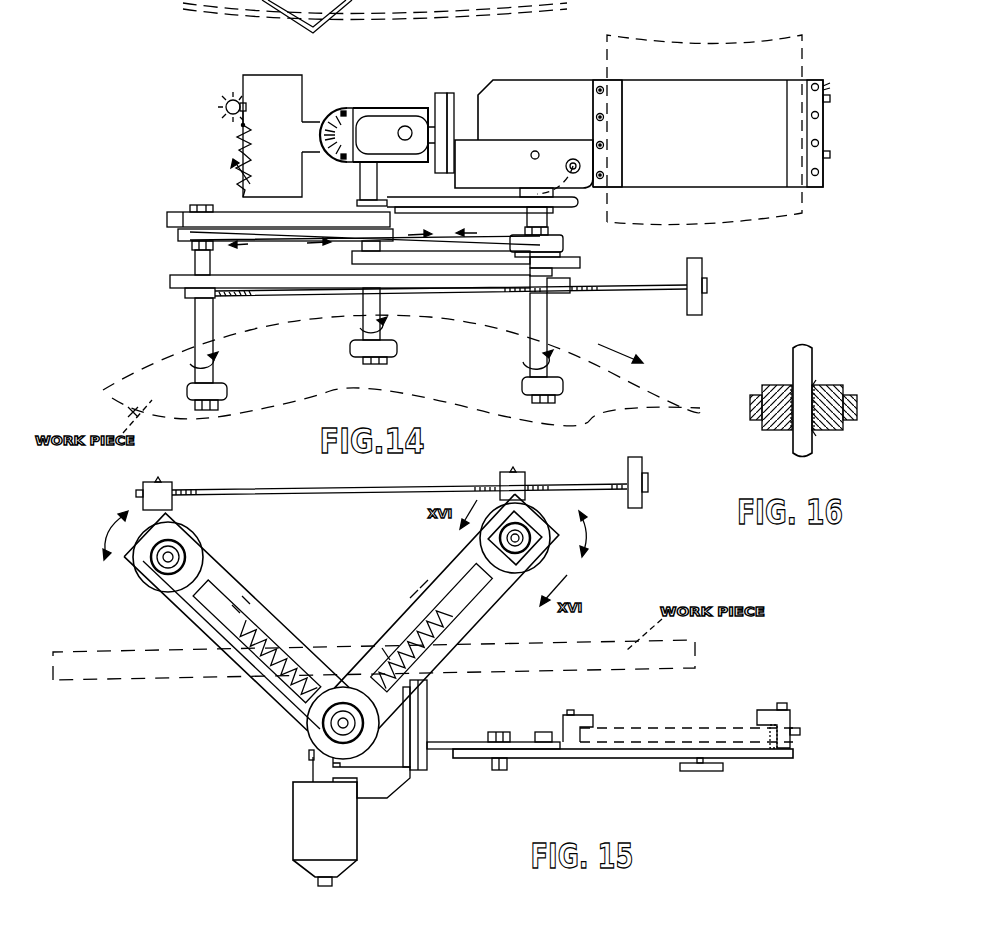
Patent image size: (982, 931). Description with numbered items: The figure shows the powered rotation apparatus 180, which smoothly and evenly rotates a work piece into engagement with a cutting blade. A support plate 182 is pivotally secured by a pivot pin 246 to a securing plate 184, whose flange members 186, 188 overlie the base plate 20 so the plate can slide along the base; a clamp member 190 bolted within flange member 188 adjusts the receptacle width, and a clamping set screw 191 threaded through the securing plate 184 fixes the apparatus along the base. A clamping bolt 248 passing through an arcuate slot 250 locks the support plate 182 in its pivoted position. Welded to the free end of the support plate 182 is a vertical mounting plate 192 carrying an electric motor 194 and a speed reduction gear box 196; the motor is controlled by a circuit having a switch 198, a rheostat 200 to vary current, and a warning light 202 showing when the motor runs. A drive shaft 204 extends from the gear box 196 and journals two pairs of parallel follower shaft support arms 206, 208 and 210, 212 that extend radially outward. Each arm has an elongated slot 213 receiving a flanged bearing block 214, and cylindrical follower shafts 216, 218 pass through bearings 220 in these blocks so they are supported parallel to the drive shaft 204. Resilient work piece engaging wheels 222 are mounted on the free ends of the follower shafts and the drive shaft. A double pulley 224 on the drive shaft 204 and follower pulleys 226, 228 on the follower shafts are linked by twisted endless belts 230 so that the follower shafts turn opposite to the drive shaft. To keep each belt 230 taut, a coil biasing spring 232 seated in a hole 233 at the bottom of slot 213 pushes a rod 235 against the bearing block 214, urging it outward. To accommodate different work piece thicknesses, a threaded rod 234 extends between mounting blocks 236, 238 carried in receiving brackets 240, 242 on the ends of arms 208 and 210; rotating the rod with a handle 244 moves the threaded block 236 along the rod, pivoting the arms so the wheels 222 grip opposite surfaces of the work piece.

In FIG. 14, the base plate 20 is at (738, 50).
In FIG. 15, the base plate 20 is at (680, 733).
In FIG. 14, the rotation apparatus 180 is at (218, 135).
In FIG. 15, the rotation apparatus 180 is at (180, 750).
In FIG. 14, the support plate 182 is at (488, 160).
In FIG. 15, the support plate 182 is at (473, 741).
In FIG. 14, the securing plate 184 is at (490, 108).
In FIG. 15, the securing plate 184 is at (627, 759).
In FIG. 14, the flange member 186 is at (617, 120).
In FIG. 15, the flange member 186 is at (590, 717).
In FIG. 14, the flange member 188 is at (801, 97).
In FIG. 15, the flange member 188 is at (767, 713).
In FIG. 14, the clamp member 190 is at (826, 90).
In FIG. 15, the clamp member 190 is at (772, 748).
In FIG. 15, the clamping set screw 191 is at (713, 771).
In FIG. 14, the mounting plate 192 is at (450, 110).
In FIG. 15, the mounting plate 192 is at (427, 706).
In FIG. 14, the electric motor 194 is at (333, 117).
In FIG. 15, the electric motor 194 is at (312, 830).
In FIG. 14, the speed reduction gear box 196 is at (402, 110).
In FIG. 15, the speed reduction gear box 196 is at (318, 766).
In FIG. 14, the switch 198 is at (248, 137).
In FIG. 14, the variable resistor 200 is at (251, 175).
In FIG. 14, the warning light 202 is at (247, 105).
In FIG. 14, the drive shaft 204 is at (360, 184).
In FIG. 14, the follower shaft support arm 206 is at (410, 198).
In FIG. 14, the follower shaft support arm 208 is at (581, 266).
In FIG. 16, the follower shaft support arm 208 is at (758, 426).
In FIG. 15, the follower shaft support arm 208 is at (393, 647).
In FIG. 14, the follower shaft support arm 210 is at (170, 280).
In FIG. 15, the follower shaft support arm 210 is at (244, 606).
In FIG. 14, the follower shaft support arm 212 is at (170, 215).
In FIG. 15, the elongated slot 213 is at (216, 589).
In FIG. 16, the flanged bearing block 214 is at (834, 383).
In FIG. 15, the flanged bearing block 214 is at (516, 556).
In FIG. 14, the follower shaft 216 is at (546, 322).
In FIG. 16, the follower shaft 216 is at (797, 361).
In FIG. 15, the follower shaft 216 is at (537, 553).
In FIG. 14, the follower shaft 218 is at (194, 327).
In FIG. 16, the bearing 220 is at (814, 435).
In FIG. 14, the work piece engaging wheel 222 is at (224, 390).
In FIG. 15, the work piece engaging wheel 222 is at (175, 550).
In FIG. 14, the double pulley 224 is at (352, 255).
In FIG. 14, the follower pulley 226 is at (559, 236).
In FIG. 14, the follower pulley 228 is at (189, 245).
In FIG. 14, the endless belt 230 is at (247, 234).
In FIG. 15, the endless belt 230 is at (174, 602).
In FIG. 15, the coil biasing spring 232 is at (290, 638).
In FIG. 15, the hole 233 is at (257, 614).
In FIG. 14, the threaded rod 234 is at (458, 292).
In FIG. 15, the threaded rod 234 is at (330, 494).
In FIG. 15, the rod 235 is at (201, 587).
In FIG. 15, the mounting block 236 is at (517, 478).
In FIG. 15, the mounting block 238 is at (165, 490).
In FIG. 15, the receiving bracket 240 is at (531, 523).
In FIG. 15, the receiving bracket 242 is at (126, 534).
In FIG. 14, the handle 244 is at (691, 269).
In FIG. 15, the handle 244 is at (641, 466).
In FIG. 14, the pivot pin 246 is at (581, 164).
In FIG. 15, the pivot pin 246 is at (542, 732).
In FIG. 14, the clamping bolt 248 is at (531, 158).
In FIG. 15, the clamping bolt 248 is at (500, 770).
In FIG. 14, the arcuate slot 250 is at (549, 170).